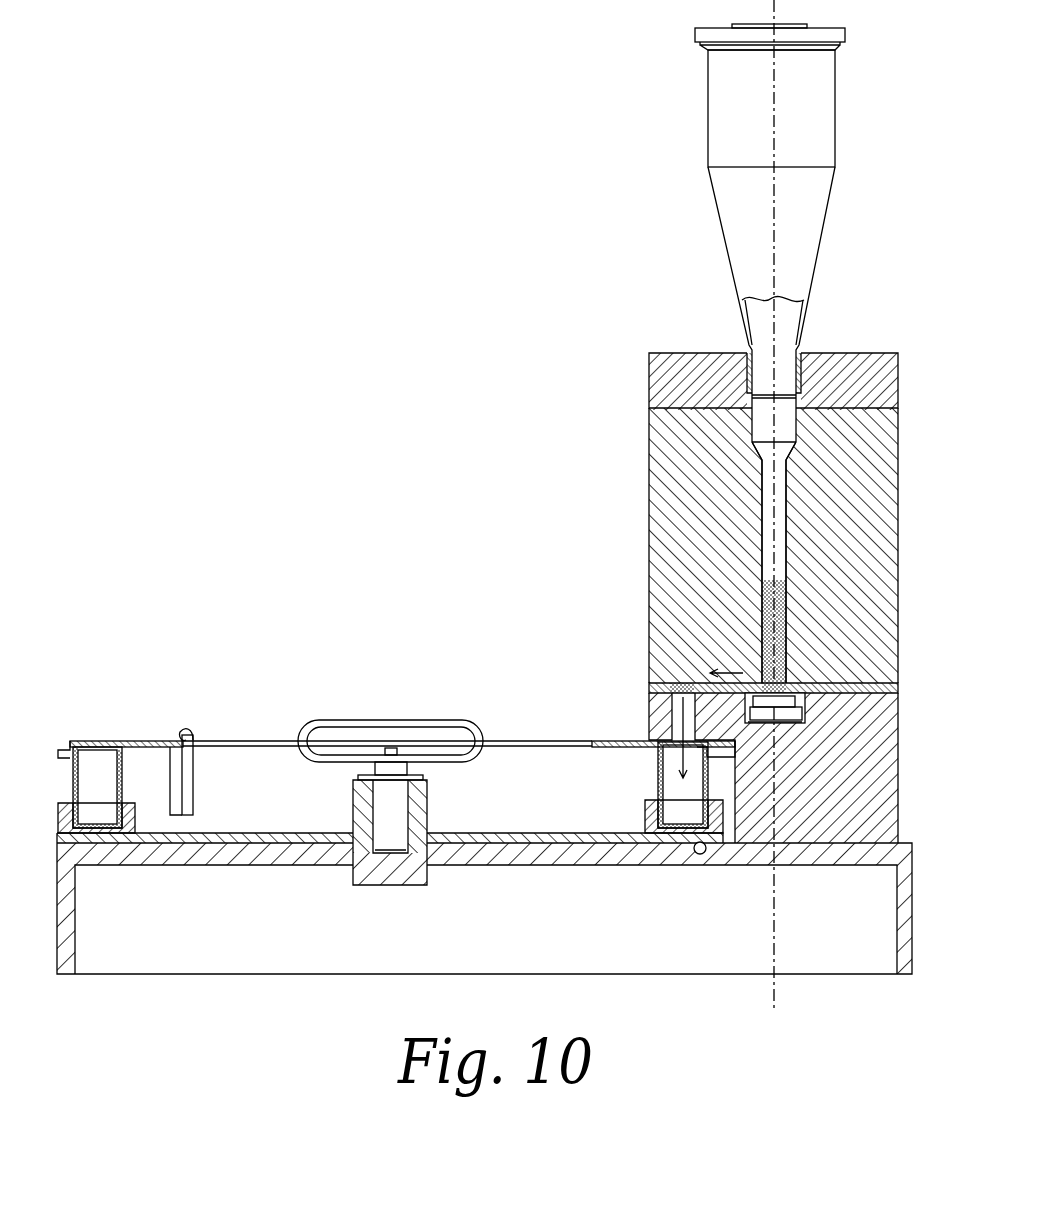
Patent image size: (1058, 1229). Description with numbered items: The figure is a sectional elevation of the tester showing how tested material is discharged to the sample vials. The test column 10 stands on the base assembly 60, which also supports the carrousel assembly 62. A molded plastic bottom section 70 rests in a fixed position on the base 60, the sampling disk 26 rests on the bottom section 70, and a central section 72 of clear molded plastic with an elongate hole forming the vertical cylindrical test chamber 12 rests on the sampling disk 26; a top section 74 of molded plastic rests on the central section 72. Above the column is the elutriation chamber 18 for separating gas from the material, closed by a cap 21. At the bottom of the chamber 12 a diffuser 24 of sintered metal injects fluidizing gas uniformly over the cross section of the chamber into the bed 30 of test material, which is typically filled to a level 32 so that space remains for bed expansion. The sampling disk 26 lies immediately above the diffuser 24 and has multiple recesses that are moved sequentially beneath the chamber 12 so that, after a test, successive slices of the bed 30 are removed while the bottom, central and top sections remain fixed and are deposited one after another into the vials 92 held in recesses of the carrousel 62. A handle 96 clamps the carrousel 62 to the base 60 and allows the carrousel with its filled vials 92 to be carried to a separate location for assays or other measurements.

The test column 10 is at (513, 496).
The test chamber 12 is at (768, 505).
The elutriation chamber 18 is at (787, 318).
The cap 21 is at (847, 34).
The diffuser 24 is at (787, 713).
The sampling disk 26 is at (898, 690).
The bed 30 is at (762, 608).
The level 32 is at (773, 580).
The base assembly 60 is at (921, 876).
The carrousel assembly 62 is at (377, 686).
The bottom section 70 is at (898, 770).
The central section 72 is at (898, 515).
The top section 74 is at (649, 385).
The vials 92 is at (122, 790).
The handle 96 is at (405, 720).